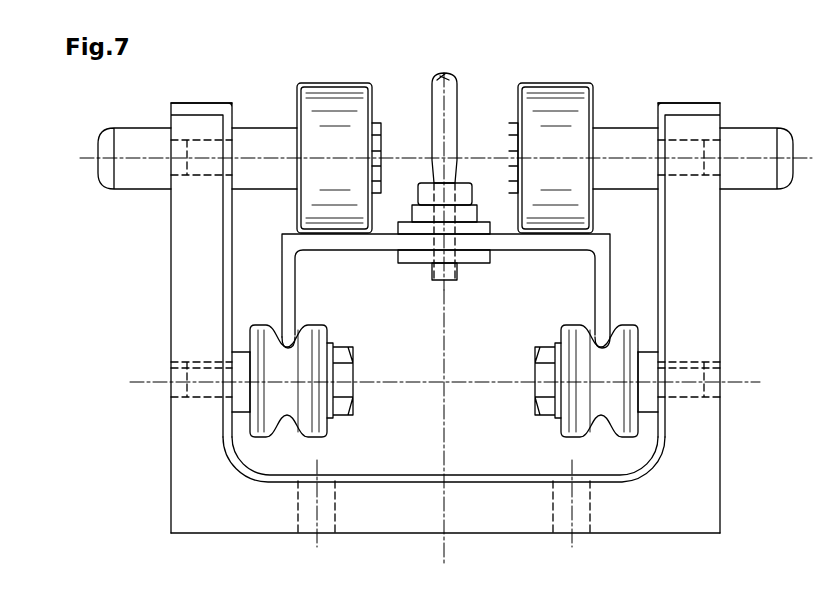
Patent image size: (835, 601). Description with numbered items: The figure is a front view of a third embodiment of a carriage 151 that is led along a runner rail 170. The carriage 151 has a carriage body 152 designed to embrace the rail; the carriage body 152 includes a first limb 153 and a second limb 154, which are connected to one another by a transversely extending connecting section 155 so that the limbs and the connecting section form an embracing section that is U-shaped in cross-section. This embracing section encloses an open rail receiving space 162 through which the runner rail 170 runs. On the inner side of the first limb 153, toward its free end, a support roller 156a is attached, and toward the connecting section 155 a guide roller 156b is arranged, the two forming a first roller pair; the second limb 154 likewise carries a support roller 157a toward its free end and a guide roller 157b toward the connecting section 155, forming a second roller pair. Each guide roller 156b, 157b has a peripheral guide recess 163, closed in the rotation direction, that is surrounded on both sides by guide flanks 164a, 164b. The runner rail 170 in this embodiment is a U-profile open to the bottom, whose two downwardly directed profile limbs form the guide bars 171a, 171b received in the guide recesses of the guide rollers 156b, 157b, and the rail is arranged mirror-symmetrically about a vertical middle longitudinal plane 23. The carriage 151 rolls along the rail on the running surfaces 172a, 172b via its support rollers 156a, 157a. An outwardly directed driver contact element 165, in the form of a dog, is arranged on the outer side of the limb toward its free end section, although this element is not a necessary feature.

The vertical middle longitudinal plane 23 is at (442, 502).
The carriage 151 is at (704, 101).
The carriage body 152 is at (191, 513).
The first limb 153 is at (180, 281).
The second limb 154 is at (698, 297).
The connecting section 155 is at (475, 517).
The support roller 156a is at (312, 100).
The guide roller 156b is at (305, 345).
The support roller 157a is at (548, 103).
The guide roller 157b is at (573, 358).
The rail receiving space 162 is at (427, 430).
The guide recess 163 is at (287, 425).
The guide flank 164a is at (263, 428).
The guide flank 164b is at (308, 420).
The driver contact element 165 is at (132, 142).
The runner rail 170 is at (563, 258).
The guide bar 171a is at (287, 305).
The guide bar 171b is at (602, 328).
The running surface 172a is at (380, 233).
The running surface 172b is at (505, 233).